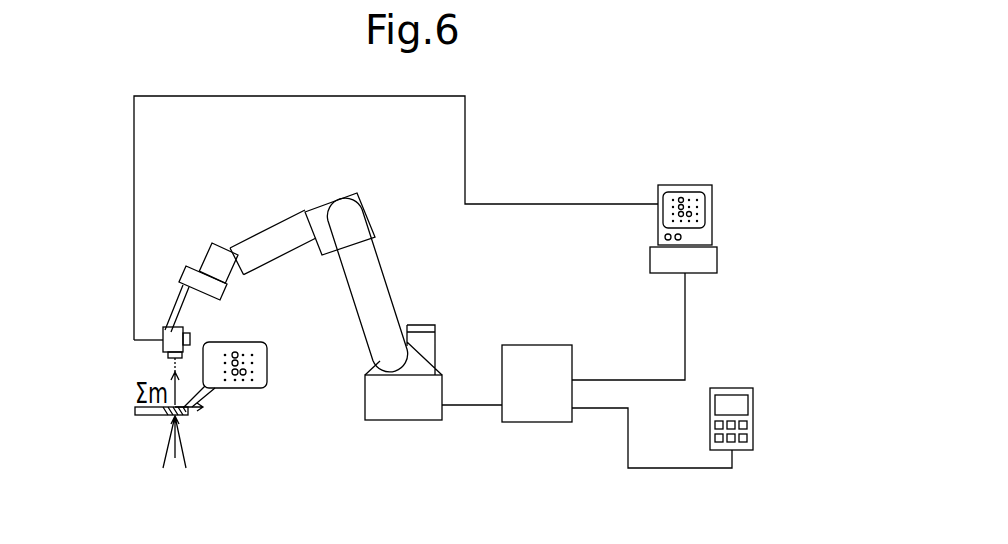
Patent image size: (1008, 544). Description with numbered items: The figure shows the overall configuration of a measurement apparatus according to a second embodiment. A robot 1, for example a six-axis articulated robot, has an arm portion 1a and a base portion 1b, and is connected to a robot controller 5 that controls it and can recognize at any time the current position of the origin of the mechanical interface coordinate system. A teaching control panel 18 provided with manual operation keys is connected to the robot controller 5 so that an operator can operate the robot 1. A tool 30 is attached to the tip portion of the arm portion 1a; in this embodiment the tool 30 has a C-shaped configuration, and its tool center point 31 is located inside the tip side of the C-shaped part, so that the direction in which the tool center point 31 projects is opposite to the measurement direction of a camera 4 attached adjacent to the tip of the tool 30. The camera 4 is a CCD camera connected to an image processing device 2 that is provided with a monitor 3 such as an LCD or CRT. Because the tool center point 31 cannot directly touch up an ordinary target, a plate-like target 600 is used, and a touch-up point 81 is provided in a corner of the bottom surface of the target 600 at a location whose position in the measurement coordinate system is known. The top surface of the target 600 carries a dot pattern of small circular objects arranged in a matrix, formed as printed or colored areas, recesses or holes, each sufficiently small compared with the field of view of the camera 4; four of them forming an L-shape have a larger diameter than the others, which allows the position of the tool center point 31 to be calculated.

The robot 1 is at (372, 283).
The arm portion 1a is at (273, 237).
The base portion 1b is at (402, 402).
The image processing device 2 is at (702, 265).
The monitor 3 is at (702, 233).
The camera 4 is at (163, 350).
The robot controller 5 is at (560, 372).
The teaching control panel 18 is at (755, 430).
The tool 30 is at (187, 273).
The tool center point 31 is at (190, 337).
The touch-up point 81 is at (138, 418).
The target 600 is at (188, 420).